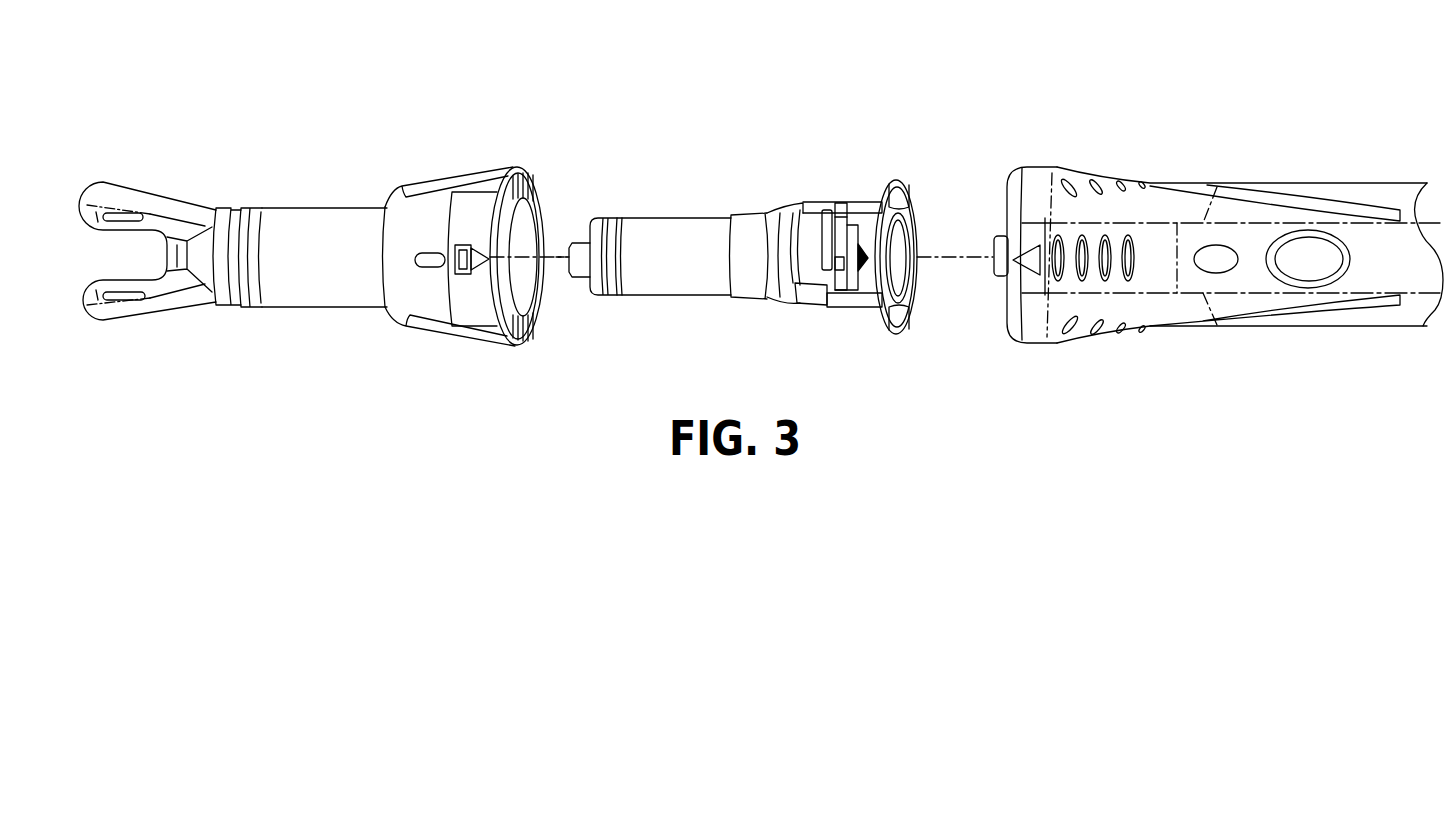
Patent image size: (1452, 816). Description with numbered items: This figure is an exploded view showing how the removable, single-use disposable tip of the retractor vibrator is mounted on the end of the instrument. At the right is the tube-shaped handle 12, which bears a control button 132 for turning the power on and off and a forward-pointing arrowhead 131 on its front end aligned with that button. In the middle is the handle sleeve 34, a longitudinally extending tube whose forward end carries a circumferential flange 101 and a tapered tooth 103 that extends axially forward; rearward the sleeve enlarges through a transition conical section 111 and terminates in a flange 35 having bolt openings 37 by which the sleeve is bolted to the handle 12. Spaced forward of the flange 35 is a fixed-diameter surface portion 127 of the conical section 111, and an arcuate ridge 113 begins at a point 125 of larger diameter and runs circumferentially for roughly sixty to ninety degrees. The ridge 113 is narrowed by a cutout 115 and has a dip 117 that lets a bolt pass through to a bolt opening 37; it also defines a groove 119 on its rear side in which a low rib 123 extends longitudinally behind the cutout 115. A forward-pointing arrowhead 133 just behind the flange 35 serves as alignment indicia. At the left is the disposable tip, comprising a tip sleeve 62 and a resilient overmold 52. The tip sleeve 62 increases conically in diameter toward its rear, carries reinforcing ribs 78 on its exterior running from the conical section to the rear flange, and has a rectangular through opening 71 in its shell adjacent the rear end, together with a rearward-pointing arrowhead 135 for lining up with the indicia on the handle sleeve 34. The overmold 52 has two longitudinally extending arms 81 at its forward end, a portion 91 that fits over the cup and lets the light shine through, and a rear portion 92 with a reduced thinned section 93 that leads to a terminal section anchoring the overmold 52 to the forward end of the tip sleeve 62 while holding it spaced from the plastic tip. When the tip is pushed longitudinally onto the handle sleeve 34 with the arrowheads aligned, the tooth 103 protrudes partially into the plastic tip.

The handle 12 is at (1187, 313).
The handle sleeve 34 is at (668, 280).
The flange 35 is at (907, 195).
The bolt openings 37 is at (917, 217).
The overmold 52 is at (163, 205).
The tip sleeve 62 is at (341, 208).
The rectangular through opening 71 is at (465, 245).
The reinforcing ribs 78 is at (463, 182).
The arms 81 is at (120, 182).
The portion of the overmold 91 is at (193, 215).
The rear portion 92 is at (262, 306).
The reduced thinned section 93 is at (241, 300).
The circumferential flange 101 is at (620, 235).
The tooth 103 is at (577, 252).
The transition conical section 111 is at (783, 290).
The arcuate ridge 113 is at (843, 205).
The cutout 115 is at (818, 306).
The dip 117 is at (827, 218).
The groove 119 is at (851, 203).
The low rib 123 is at (845, 258).
The point 125 is at (839, 271).
The surface portion 127 is at (805, 215).
The arrowhead 131 is at (1040, 252).
The control button 132 is at (1307, 257).
The arrowhead 133 is at (840, 308).
The arrowhead 135 is at (478, 273).